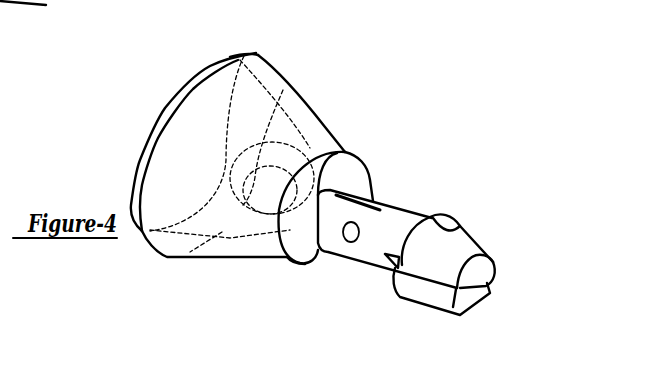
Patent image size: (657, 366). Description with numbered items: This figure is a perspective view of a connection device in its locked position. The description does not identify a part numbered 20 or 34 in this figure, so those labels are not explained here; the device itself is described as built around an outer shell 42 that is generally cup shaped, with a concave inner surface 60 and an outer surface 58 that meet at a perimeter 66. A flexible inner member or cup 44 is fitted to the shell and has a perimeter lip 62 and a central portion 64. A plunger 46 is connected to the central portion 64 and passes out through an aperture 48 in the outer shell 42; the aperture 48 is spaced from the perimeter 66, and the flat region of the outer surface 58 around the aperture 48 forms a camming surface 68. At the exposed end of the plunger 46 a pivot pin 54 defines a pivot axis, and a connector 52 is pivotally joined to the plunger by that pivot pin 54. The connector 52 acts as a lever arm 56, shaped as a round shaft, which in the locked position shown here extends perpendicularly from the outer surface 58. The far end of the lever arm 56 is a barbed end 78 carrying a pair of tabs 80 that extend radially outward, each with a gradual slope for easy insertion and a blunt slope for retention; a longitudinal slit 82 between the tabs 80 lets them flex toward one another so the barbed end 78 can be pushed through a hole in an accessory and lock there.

The connector assembly 20 is at (420, 62).
The rod 34 is at (50, 6).
The outer shell 42 is at (320, 104).
The flexible inner member or cup 44 is at (150, 113).
The plunger 46 is at (267, 199).
The aperture 48 is at (323, 250).
The connector 52 is at (410, 201).
The pivot pin 54 is at (350, 242).
The lever arm 56 is at (400, 220).
The outer surface 58 is at (272, 260).
The concave inner surface 60 is at (287, 88).
The perimeter lip 62 is at (202, 63).
The central portion 64 is at (307, 148).
The perimeter 66 is at (240, 50).
The camming surface 68 is at (368, 157).
The barbed end 78 is at (497, 240).
The tabs 80 is at (450, 225).
The longitudinal slit 82 is at (490, 291).